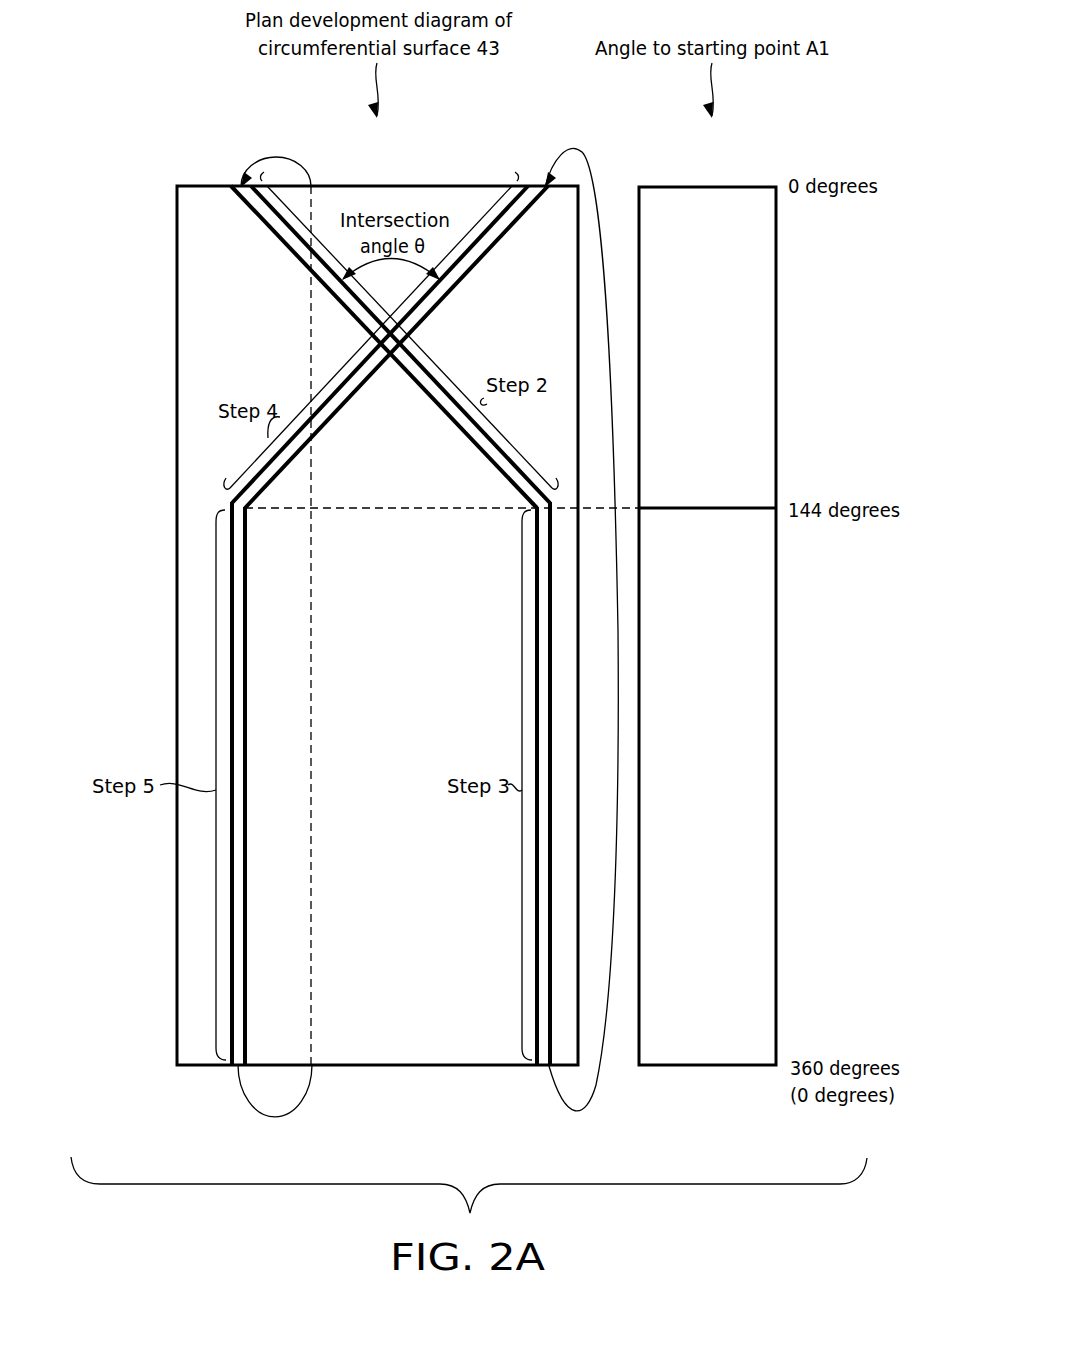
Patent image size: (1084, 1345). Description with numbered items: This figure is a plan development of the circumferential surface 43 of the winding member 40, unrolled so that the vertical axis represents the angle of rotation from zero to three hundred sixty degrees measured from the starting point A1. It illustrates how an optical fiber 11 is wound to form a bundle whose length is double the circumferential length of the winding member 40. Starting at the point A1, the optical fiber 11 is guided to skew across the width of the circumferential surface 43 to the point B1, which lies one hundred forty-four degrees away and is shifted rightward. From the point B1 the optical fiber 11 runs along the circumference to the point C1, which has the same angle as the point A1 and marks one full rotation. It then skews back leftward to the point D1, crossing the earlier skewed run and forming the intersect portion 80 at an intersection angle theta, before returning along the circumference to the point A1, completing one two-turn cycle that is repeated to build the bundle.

The optical fiber 11 is at (266, 224).
The winding member 40 is at (145, 615).
The circumferential surface 43 is at (190, 672).
The intersect portion 80 is at (388, 352).
The point A1 is at (241, 186).
The point B1 is at (546, 506).
The point C1 is at (541, 186).
The point D1 is at (229, 503).